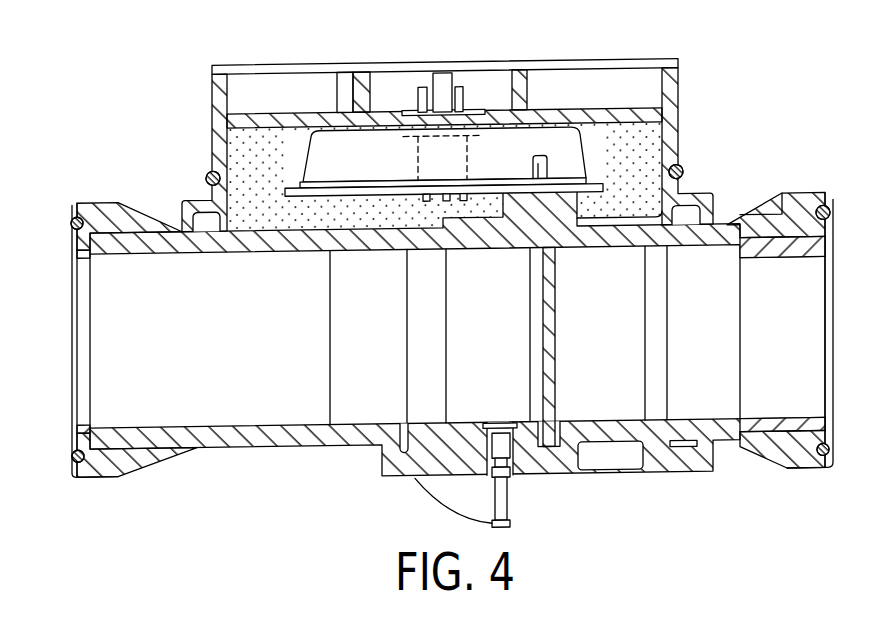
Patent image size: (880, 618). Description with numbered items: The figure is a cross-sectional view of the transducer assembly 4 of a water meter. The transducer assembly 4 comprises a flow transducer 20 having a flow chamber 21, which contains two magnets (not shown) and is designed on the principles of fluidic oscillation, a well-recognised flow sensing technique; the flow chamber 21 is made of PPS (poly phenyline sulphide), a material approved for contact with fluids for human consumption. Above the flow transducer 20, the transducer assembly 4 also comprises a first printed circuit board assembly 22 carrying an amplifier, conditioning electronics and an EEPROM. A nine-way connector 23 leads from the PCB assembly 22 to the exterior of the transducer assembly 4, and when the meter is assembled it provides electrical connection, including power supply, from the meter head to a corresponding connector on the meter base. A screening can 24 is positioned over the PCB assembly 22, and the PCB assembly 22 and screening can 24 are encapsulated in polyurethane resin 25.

The transducer assembly 4 is at (423, 268).
The flow transducer 20 is at (420, 458).
The flow chamber 21 is at (503, 398).
The first printed circuit board assembly 22 is at (347, 192).
The 9-way connector 23 is at (447, 105).
The screening can 24 is at (560, 119).
The polyurethane resin 25 is at (643, 143).